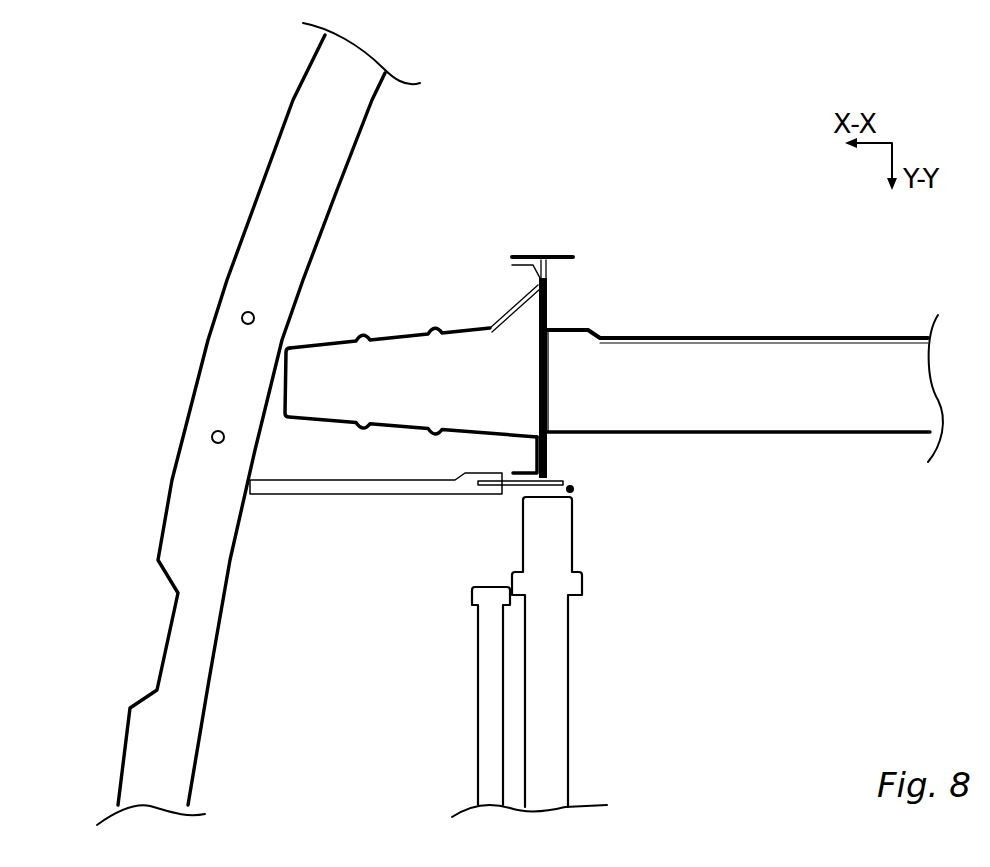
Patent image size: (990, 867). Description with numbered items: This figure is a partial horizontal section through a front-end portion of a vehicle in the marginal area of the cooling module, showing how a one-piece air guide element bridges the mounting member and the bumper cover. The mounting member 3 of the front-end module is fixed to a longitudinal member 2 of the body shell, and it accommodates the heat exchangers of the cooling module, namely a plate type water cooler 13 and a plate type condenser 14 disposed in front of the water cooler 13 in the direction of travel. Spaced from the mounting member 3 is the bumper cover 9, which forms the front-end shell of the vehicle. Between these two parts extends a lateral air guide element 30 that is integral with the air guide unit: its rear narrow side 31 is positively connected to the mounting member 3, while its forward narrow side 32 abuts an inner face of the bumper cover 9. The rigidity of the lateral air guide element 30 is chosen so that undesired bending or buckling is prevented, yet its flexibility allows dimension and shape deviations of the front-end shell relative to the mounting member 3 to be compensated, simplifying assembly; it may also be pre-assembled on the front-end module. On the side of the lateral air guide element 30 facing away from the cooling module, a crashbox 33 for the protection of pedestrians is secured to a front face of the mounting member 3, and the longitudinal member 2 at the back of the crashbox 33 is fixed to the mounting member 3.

The longitudinal member 2 is at (763, 334).
The mounting member 3 is at (548, 302).
The bumper cover 9 is at (158, 507).
The water cooler 13 is at (569, 750).
The condenser 14 is at (478, 731).
The lateral air guide element 30 is at (420, 505).
The rear narrow side 31 is at (492, 478).
The forward narrow side 32 is at (251, 500).
The crashbox 33 is at (390, 333).